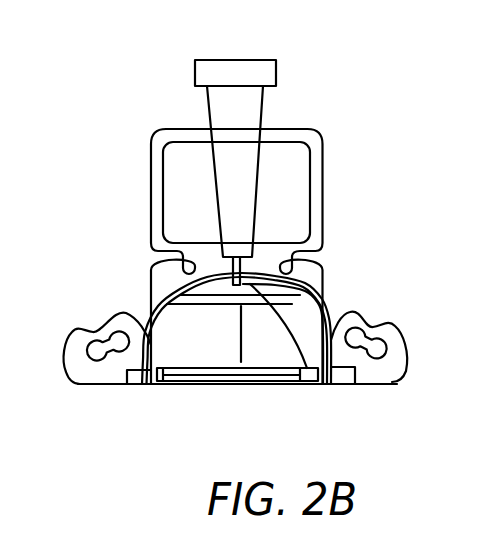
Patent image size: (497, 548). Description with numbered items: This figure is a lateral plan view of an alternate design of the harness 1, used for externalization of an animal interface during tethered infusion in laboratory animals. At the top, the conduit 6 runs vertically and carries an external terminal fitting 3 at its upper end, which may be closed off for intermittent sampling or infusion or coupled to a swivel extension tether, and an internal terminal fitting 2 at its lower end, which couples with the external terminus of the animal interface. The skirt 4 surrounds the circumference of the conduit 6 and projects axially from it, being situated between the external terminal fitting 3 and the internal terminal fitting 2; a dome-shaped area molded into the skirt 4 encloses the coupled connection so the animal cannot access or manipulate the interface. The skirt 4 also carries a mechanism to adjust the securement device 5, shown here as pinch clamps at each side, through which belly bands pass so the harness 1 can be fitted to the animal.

The harness 1 is at (105, 117).
The internal terminal fitting 2 is at (252, 282).
The external terminal fitting 3 is at (243, 60).
The skirt 4 is at (325, 183).
The mechanism to adjust the securement device 5 is at (363, 366).
The conduit 6 is at (222, 148).